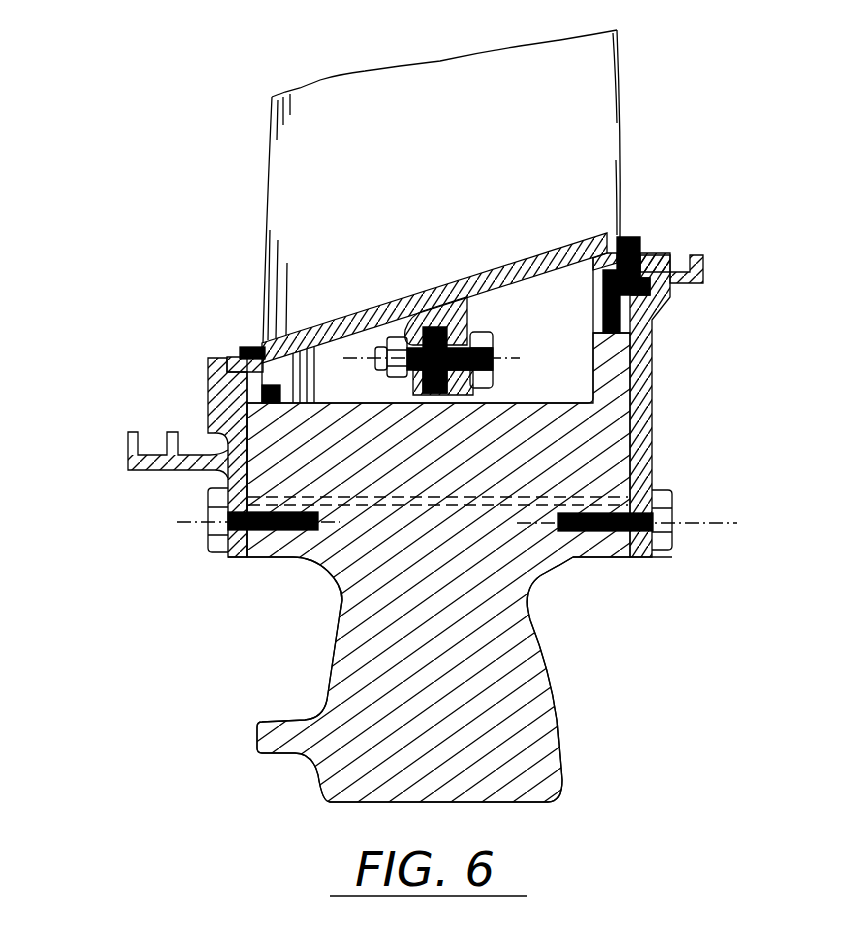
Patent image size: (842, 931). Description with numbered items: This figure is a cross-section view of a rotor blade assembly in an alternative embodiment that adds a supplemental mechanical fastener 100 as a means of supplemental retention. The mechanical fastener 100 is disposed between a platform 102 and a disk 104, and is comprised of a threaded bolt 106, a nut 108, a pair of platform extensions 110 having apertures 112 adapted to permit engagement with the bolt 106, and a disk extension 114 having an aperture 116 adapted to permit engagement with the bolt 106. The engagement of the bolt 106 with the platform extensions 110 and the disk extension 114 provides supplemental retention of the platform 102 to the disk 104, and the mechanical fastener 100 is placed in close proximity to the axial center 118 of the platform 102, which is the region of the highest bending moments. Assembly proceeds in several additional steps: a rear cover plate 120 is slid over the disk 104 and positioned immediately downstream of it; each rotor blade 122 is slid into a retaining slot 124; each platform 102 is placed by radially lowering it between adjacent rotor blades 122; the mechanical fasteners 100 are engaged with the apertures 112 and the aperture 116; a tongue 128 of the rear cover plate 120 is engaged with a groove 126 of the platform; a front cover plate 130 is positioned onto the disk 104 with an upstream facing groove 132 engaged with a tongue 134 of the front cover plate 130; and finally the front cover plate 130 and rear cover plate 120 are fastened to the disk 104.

The mechanical fastener 100 is at (495, 386).
The platform 102 is at (633, 240).
The disk 104 is at (645, 478).
The threaded bolt 106 is at (497, 347).
The nut 108 is at (293, 312).
The platform extensions 110 is at (467, 322).
The apertures 112 is at (413, 330).
The disk extension 114 is at (413, 400).
The aperture 116 is at (437, 378).
The axial center 118 is at (518, 265).
The rear cover plate 120 is at (672, 300).
The rotor blade 122 is at (445, 173).
The retaining slot 124 is at (487, 500).
The groove 126 is at (648, 250).
The tongue 128 is at (676, 253).
The front cover plate 130 is at (210, 400).
The upstream facing groove 132 is at (248, 357).
The tongue 134 is at (240, 362).